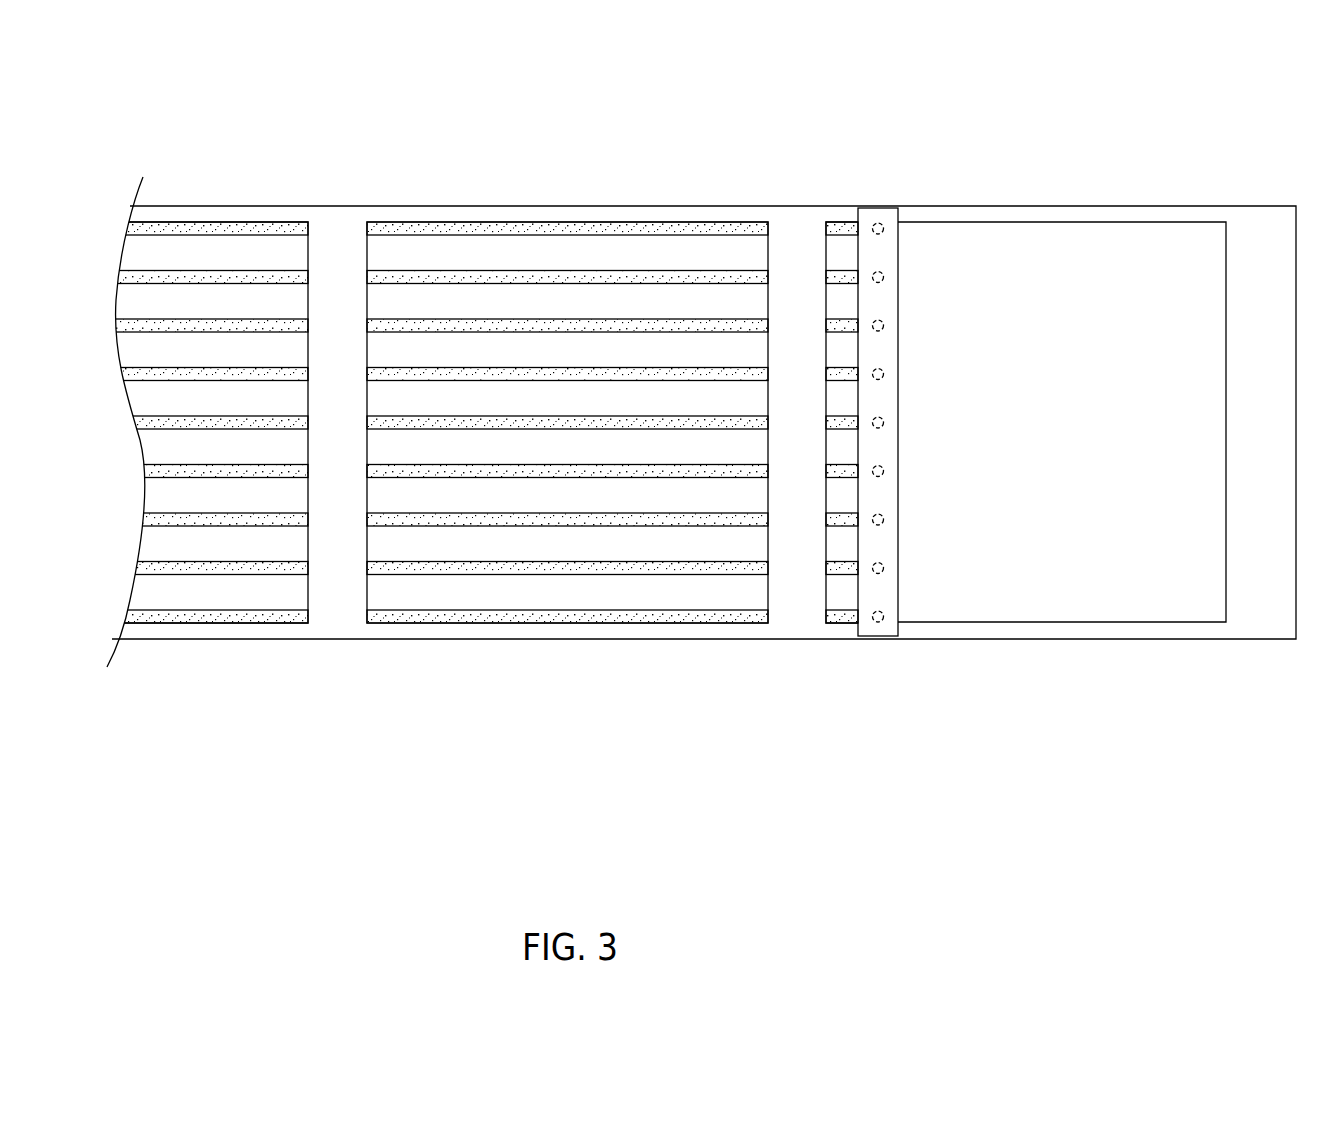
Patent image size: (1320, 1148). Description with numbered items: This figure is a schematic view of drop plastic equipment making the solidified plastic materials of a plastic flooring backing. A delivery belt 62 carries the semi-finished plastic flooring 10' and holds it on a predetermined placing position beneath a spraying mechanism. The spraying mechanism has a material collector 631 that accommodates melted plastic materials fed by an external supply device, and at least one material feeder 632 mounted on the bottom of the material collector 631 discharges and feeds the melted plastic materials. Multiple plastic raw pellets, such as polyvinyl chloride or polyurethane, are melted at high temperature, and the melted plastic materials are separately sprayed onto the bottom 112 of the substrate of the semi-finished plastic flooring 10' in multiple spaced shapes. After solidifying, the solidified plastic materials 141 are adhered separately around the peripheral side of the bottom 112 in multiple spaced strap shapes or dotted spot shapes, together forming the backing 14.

The backing 14 is at (567, 330).
The solidified plastic materials 141 is at (487, 228).
The delivery belt 62 is at (340, 617).
The material collector 631 is at (928, 373).
The material feeder 632 is at (880, 272).
The semi-finished plastic flooring 10' is at (1062, 434).
The bottom of the substrate 112 is at (1090, 592).